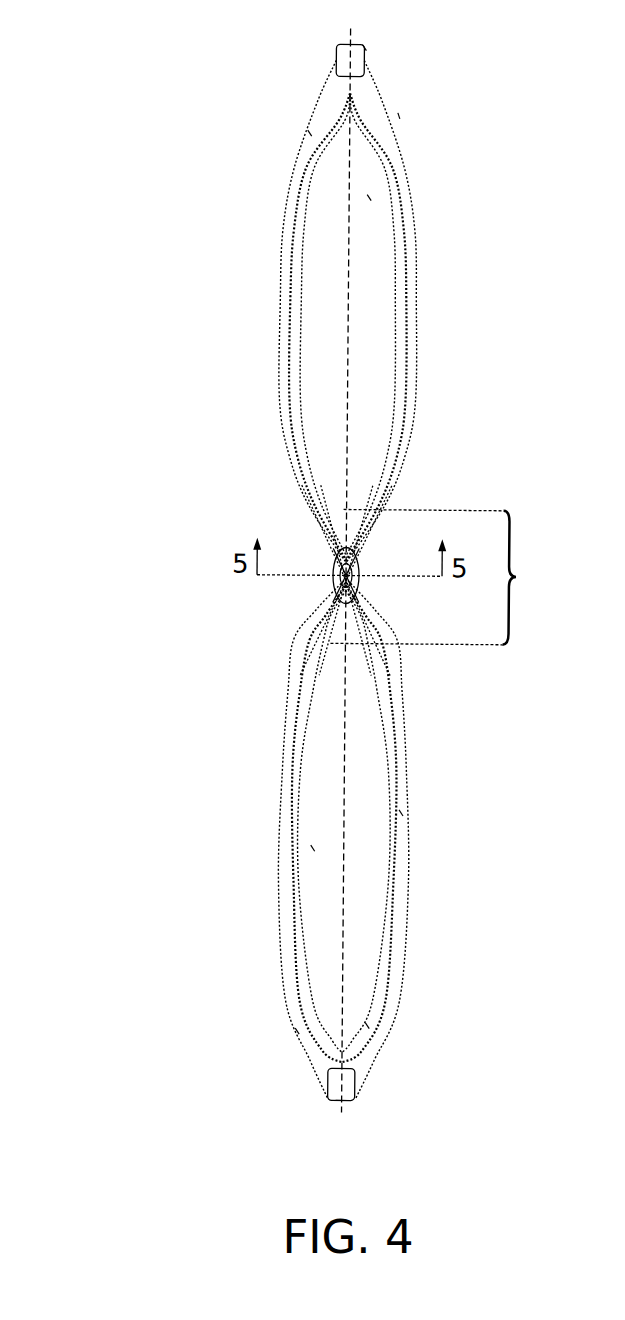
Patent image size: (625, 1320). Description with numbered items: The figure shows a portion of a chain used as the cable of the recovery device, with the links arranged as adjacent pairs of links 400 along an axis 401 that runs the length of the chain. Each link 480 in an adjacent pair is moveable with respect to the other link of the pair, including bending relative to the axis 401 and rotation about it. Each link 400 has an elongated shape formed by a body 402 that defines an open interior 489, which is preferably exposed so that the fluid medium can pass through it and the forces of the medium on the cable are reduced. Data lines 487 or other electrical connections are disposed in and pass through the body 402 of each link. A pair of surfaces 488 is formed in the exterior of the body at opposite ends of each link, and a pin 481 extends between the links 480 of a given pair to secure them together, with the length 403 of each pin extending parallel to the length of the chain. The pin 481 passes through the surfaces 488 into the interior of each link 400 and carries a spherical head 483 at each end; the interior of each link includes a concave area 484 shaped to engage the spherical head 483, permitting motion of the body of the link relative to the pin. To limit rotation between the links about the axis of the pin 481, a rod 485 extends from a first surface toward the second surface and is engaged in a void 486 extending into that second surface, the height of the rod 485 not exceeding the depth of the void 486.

The link 400 is at (75, 134).
The axis 401 is at (349, 243).
The body 402 is at (322, 64).
The length of each pin 403 is at (449, 577).
The link 480 is at (398, 115).
The pin 481 is at (347, 532).
The spherical head 483 is at (347, 513).
The concave area 484 is at (364, 512).
The rod 485 is at (367, 44).
The void 486 is at (354, 1102).
The data lines 487 is at (310, 133).
The surfaces 488 is at (332, 50).
The open interior 489 is at (370, 197).